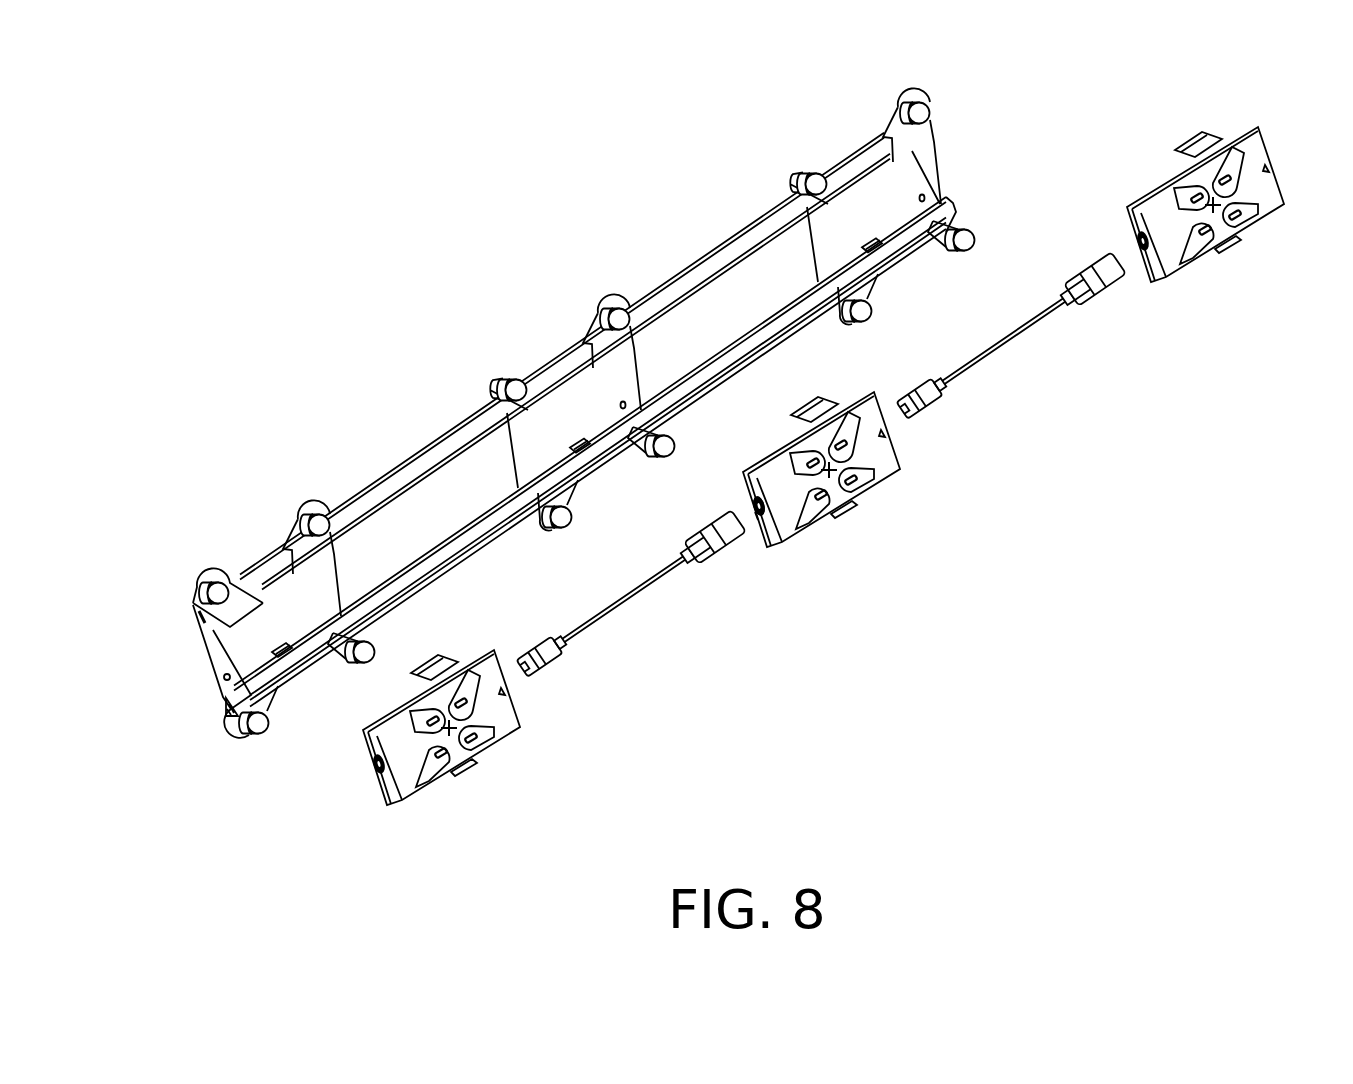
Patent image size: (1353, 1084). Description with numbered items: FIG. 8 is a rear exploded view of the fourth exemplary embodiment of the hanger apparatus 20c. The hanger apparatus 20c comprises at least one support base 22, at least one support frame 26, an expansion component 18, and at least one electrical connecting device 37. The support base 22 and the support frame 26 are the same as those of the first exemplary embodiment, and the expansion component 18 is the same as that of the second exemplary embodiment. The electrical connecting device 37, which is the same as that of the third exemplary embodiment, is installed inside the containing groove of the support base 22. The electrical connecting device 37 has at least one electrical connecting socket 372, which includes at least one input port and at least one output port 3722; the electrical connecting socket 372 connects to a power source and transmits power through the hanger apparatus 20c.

The hanger apparatus 20c is at (636, 114).
The expansion component 18 is at (386, 454).
The support base 22 is at (201, 660).
The support frame 26 is at (213, 568).
The electrical connecting device 37 is at (866, 503).
The electrical connecting socket 372 is at (753, 502).
The output port 3722 is at (753, 516).